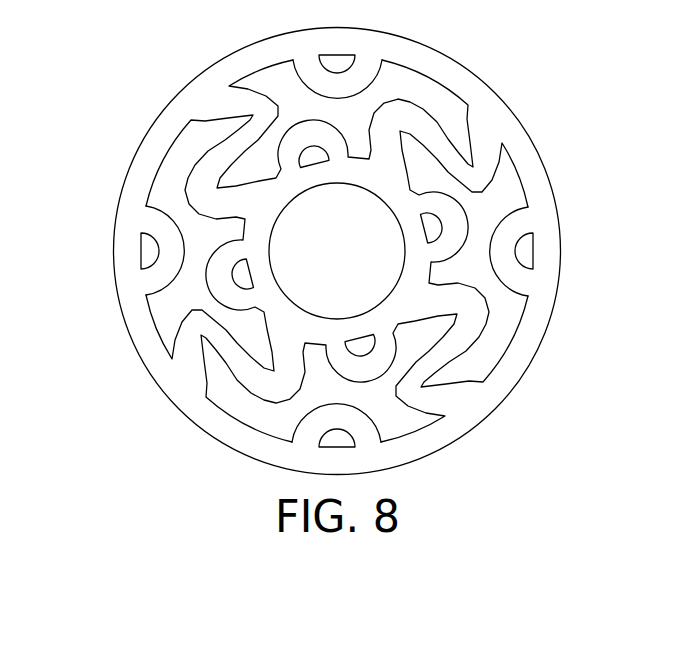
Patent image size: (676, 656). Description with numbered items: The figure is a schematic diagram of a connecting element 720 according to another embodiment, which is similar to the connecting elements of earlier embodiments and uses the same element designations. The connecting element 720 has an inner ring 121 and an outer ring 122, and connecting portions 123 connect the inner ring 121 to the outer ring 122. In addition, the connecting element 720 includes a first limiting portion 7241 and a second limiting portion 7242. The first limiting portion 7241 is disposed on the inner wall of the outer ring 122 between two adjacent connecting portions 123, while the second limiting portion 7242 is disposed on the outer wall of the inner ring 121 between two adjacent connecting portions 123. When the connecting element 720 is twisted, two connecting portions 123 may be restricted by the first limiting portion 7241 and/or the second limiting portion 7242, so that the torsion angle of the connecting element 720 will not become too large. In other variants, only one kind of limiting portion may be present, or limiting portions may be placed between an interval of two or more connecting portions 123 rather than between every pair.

The connecting element 720 is at (120, 50).
The outer ring 122 is at (142, 175).
The inner ring 121 is at (272, 297).
The connecting portion 123 is at (262, 388).
The second limiting portion 7242 is at (146, 216).
The first limiting portion 7241 is at (157, 283).